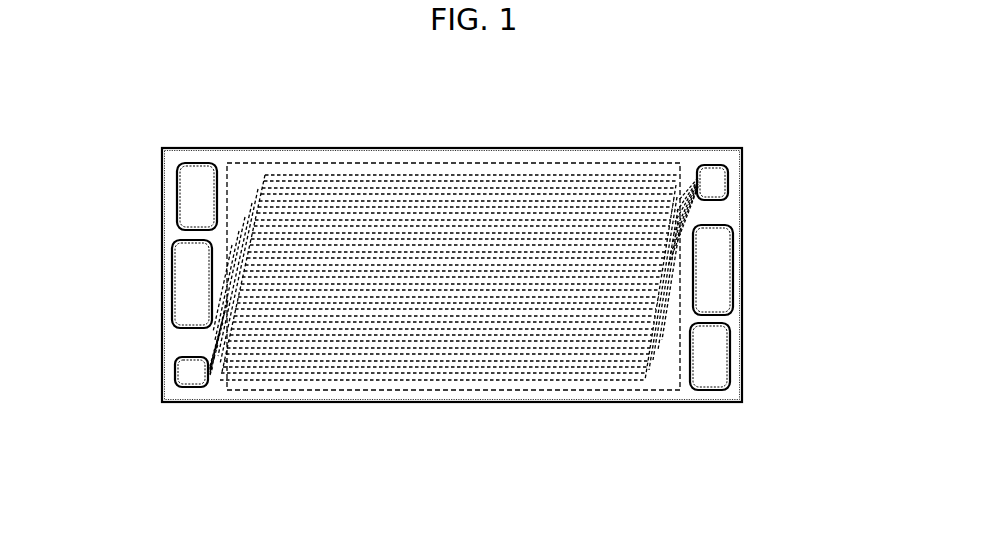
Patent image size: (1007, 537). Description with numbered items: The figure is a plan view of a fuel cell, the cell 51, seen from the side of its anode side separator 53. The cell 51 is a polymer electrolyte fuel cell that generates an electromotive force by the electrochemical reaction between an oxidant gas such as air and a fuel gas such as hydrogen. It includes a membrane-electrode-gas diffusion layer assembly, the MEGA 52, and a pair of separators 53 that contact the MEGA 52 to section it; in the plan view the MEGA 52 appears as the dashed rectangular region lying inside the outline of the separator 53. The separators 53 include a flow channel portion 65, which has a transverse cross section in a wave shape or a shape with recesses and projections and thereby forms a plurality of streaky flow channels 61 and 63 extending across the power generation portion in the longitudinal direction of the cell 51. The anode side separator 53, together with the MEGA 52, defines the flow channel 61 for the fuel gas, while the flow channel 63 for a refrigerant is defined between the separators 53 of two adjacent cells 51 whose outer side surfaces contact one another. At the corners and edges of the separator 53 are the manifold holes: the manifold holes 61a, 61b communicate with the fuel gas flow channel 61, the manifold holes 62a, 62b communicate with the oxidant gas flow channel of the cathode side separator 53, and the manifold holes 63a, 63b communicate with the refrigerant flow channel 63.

The cell 51 is at (546, 140).
The MEGA 52 is at (657, 362).
The separator 53 is at (610, 403).
The flow channel 61 is at (477, 377).
The manifold hole 61a is at (712, 183).
The manifold hole 61b is at (188, 372).
The manifold hole 62a is at (712, 355).
The manifold hole 62b is at (193, 198).
The flow channel 63 is at (420, 370).
The manifold hole 63a is at (712, 271).
The manifold hole 63b is at (195, 278).
The flow channel portion 65 is at (502, 322).